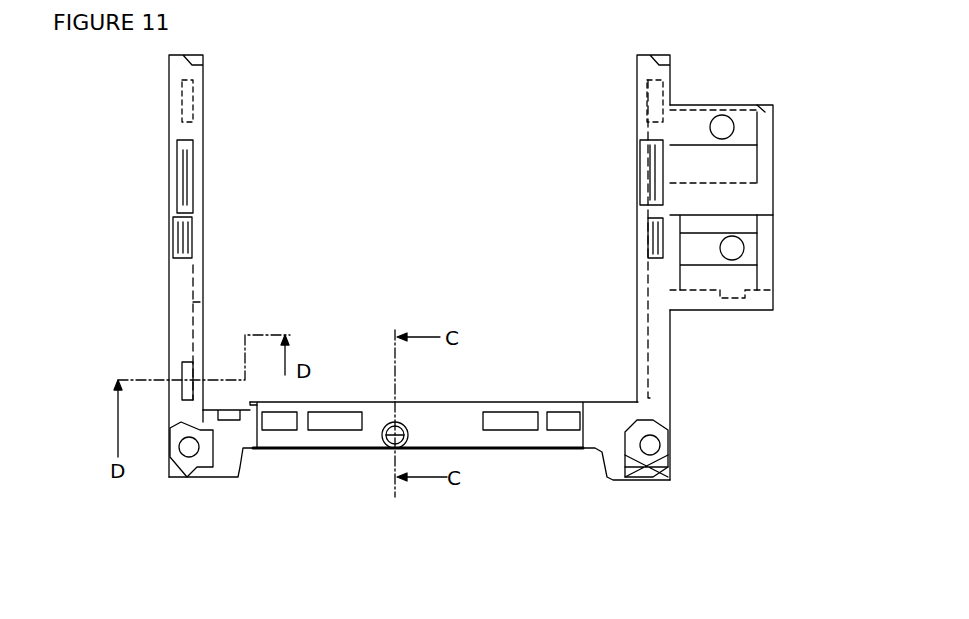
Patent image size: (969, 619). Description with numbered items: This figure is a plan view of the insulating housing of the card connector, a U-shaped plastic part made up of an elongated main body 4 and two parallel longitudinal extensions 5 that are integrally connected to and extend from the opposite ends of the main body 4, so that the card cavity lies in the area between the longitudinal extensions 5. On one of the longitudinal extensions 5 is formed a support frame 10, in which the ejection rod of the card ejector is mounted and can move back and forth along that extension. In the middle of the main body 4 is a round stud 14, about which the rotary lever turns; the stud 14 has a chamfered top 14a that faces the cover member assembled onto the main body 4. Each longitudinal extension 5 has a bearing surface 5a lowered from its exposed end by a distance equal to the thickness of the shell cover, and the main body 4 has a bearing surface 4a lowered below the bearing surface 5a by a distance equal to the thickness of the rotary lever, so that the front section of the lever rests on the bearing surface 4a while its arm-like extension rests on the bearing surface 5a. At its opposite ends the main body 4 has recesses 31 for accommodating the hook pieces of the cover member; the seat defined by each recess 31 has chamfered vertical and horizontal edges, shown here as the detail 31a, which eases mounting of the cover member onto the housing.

The main body 4 is at (528, 448).
The bearing surface 4a is at (467, 430).
The longitudinal extension 5 is at (670, 380).
The bearing surface 5a is at (182, 277).
The support frame 10 is at (167, 332).
The round stud 14 is at (383, 450).
The chamfered top 14a is at (392, 450).
The recess 31 is at (670, 480).
The mounting hole 31a is at (640, 478).